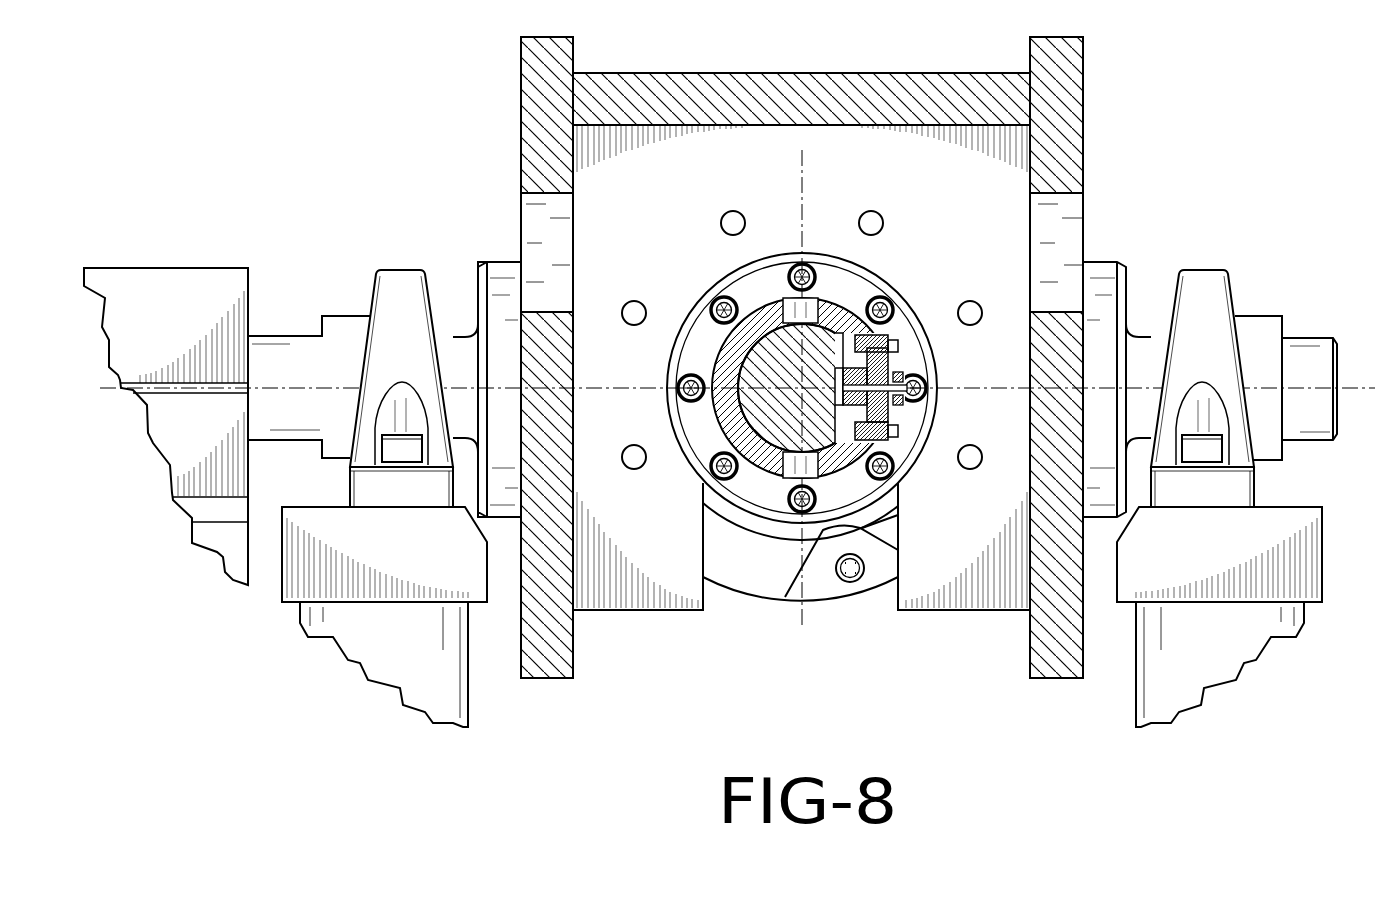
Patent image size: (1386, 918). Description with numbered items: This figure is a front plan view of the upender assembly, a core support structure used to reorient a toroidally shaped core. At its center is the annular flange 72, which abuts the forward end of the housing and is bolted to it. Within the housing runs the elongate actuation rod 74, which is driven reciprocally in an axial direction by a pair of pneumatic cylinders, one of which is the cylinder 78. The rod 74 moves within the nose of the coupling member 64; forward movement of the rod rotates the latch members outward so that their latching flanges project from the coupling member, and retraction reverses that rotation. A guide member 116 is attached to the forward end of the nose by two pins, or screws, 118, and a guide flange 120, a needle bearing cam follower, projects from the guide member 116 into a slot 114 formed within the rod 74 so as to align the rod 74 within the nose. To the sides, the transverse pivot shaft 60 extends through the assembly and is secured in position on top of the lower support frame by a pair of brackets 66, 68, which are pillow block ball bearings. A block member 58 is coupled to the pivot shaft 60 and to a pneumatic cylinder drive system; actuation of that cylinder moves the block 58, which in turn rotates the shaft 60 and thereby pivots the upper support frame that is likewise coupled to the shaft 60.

The block member 58 is at (167, 290).
The transverse pivot shaft 60 is at (288, 336).
The coupling member 64 is at (842, 357).
The bracket (pillow block ball bearing) 66 is at (1200, 280).
The bracket (pillow block ball bearing) 68 is at (400, 280).
The annular flange 72 is at (695, 358).
The actuation rod 74 is at (782, 352).
The pneumatic actuation cylinder 78 is at (732, 418).
The slot 114 is at (862, 428).
The guide member 116 is at (884, 412).
The pins (screws) 118 is at (900, 342).
The guide flange (needle bearing cam follower) 120 is at (848, 377).